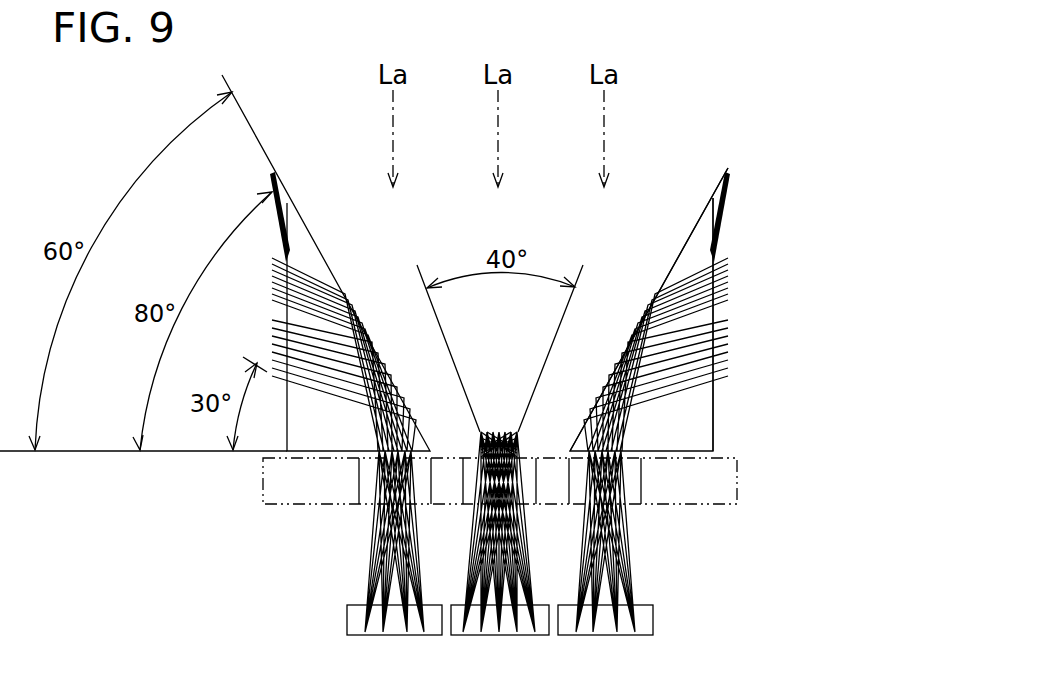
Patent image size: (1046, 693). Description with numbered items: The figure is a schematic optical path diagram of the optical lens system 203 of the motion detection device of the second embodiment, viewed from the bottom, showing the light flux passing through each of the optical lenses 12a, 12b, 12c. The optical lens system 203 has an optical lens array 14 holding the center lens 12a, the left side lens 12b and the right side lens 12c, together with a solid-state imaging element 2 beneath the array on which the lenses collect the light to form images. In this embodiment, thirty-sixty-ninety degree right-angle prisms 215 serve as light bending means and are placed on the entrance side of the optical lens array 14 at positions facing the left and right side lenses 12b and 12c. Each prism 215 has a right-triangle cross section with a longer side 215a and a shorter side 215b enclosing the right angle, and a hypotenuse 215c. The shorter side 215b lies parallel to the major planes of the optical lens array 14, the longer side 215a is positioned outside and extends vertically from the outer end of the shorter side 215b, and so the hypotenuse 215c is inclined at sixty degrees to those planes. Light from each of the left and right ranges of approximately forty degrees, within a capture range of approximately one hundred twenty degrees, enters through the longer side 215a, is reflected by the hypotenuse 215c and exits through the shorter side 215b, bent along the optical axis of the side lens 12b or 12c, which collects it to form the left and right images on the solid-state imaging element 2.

The solid-state imaging element 2 is at (647, 622).
The optical lens 12a is at (470, 458).
The left side lens 12b is at (365, 500).
The right side lens 12c is at (633, 500).
The optical lens array 14 is at (263, 493).
The optical lens system 203 is at (770, 188).
The 30-60-90 degree right-angle prism 215 is at (298, 436).
The longer side 215a is at (715, 392).
The shorter side 215b is at (700, 452).
The hypotenuse 215c is at (662, 287).